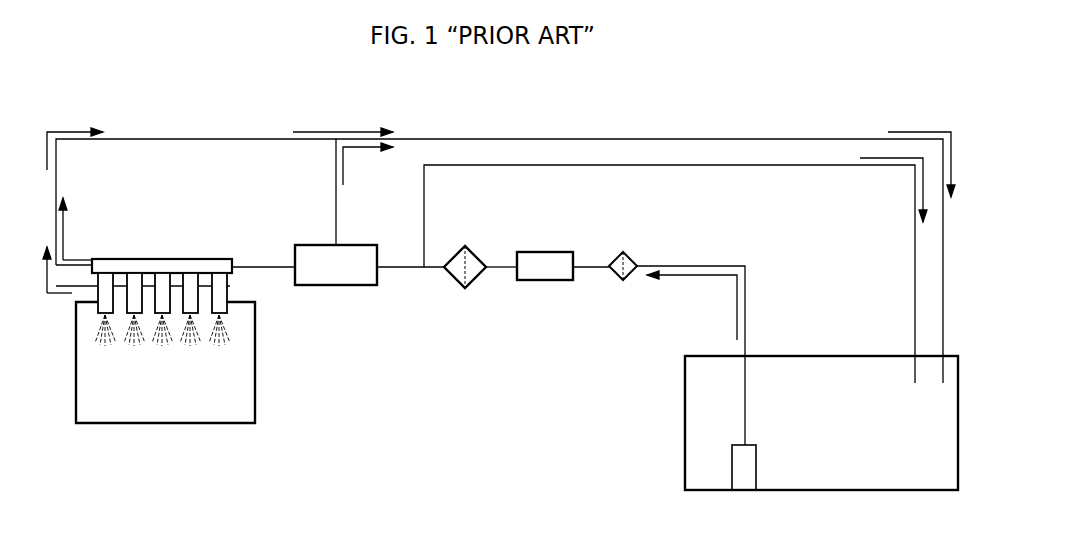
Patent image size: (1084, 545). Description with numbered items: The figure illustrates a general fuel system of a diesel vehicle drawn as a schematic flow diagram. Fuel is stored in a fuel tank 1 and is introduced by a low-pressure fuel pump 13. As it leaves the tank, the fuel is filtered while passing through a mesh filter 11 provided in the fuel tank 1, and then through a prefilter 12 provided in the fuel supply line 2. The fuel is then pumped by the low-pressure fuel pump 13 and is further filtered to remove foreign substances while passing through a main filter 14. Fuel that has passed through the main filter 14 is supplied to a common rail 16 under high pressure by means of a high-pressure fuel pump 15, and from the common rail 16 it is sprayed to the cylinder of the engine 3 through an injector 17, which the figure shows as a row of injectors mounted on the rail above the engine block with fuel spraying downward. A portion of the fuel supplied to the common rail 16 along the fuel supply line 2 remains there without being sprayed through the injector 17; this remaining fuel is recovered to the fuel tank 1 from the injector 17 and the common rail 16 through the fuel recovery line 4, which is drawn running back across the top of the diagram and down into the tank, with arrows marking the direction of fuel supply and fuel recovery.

The fuel tank 1 is at (685, 414).
The mesh filter 11 is at (732, 469).
The fuel supply line 2 is at (397, 270).
The prefilter 12 is at (619, 252).
The low-pressure fuel pump 13 is at (545, 252).
The main filter 14 is at (465, 246).
The high-pressure fuel pump 15 is at (345, 287).
The common rail 16 is at (163, 259).
The injector 17 is at (228, 289).
The engine 3 is at (255, 397).
The fuel recovery line 4 is at (145, 139).